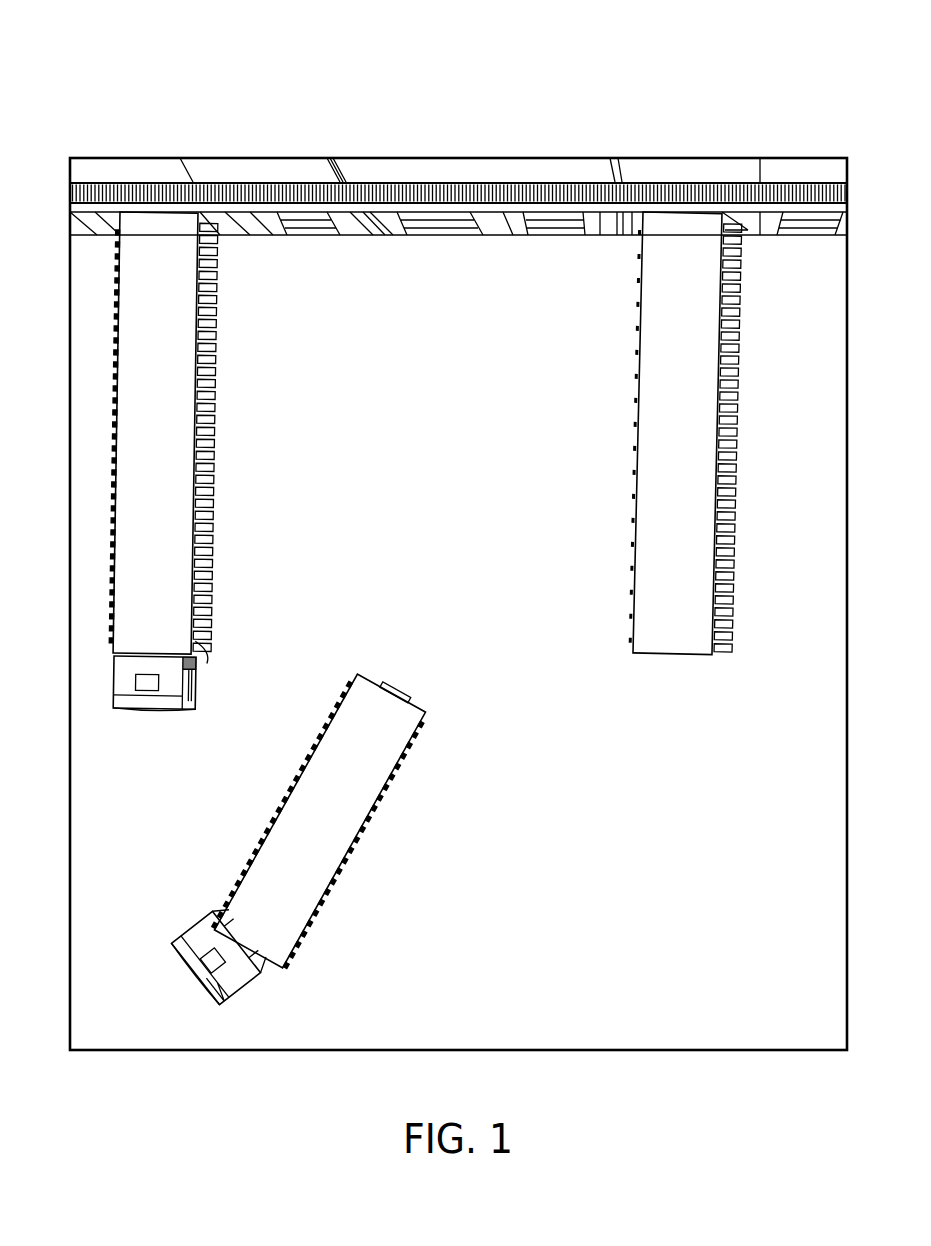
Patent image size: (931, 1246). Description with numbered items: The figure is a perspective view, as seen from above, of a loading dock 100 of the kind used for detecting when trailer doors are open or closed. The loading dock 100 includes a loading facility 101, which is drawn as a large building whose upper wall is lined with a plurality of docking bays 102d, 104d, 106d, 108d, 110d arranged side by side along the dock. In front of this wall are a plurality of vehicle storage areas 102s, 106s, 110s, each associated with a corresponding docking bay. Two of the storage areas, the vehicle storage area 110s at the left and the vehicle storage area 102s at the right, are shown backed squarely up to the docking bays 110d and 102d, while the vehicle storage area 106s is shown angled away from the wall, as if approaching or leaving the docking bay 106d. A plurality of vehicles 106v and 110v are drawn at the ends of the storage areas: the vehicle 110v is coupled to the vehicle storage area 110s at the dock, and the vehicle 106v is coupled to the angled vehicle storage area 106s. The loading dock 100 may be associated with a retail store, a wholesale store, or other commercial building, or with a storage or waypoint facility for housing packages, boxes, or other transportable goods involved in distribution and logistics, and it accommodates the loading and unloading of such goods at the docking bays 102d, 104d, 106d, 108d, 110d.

The loading dock 100 is at (114, 38).
The loading facility 101 is at (793, 168).
The docking bay 102d is at (683, 168).
The docking bay 104d is at (548, 168).
The docking bay 106d is at (408, 168).
The docking bay 108d is at (255, 168).
The docking bay 110d is at (142, 168).
The vehicle storage area 102s is at (712, 440).
The vehicle storage area 106s is at (413, 709).
The vehicle storage area 110s is at (213, 527).
The vehicle 106v is at (188, 928).
The vehicle 110v is at (205, 678).